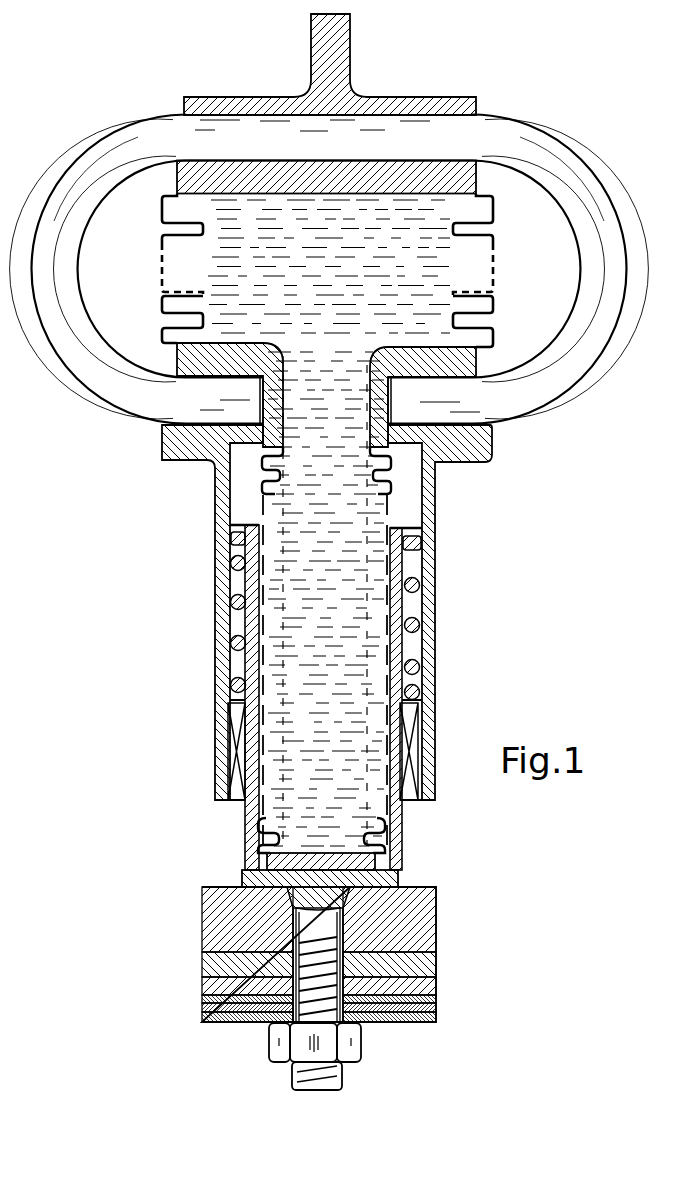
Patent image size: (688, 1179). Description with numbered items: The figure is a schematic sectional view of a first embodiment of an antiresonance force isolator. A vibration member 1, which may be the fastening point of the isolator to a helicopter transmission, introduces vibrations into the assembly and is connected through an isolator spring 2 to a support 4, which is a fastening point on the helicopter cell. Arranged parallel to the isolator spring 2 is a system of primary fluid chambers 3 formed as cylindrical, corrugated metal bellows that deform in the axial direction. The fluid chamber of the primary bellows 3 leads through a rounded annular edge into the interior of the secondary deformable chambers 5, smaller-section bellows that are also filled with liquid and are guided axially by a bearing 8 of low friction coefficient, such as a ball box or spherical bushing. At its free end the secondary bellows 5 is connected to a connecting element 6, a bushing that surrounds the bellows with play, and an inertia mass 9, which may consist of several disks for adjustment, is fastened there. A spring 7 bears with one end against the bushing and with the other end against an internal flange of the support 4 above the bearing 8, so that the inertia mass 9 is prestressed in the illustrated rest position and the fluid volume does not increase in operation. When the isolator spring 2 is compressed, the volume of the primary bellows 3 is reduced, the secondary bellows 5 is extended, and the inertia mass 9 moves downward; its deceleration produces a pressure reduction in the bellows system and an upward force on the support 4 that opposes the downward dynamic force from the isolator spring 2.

The vibration member 1 is at (318, 62).
The isolator spring 2 is at (114, 133).
The primary fluid chambers 3 is at (234, 241).
The support 4 is at (187, 432).
The secondary deformable chambers 5 is at (305, 503).
The connecting element 6 is at (245, 552).
The spring 7 is at (231, 603).
The bearing 8 is at (233, 757).
The inertia mass 9 is at (213, 960).